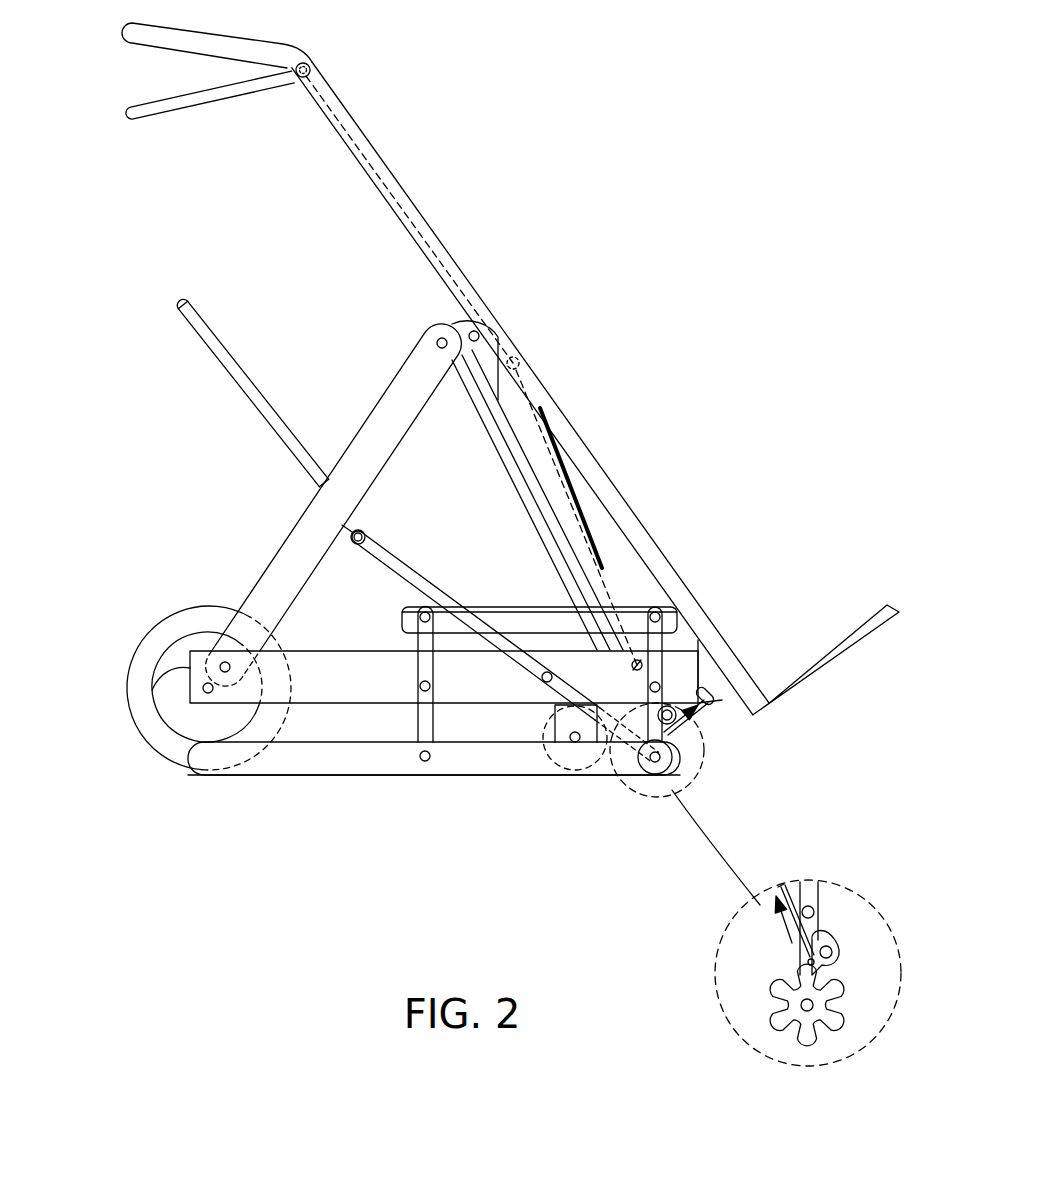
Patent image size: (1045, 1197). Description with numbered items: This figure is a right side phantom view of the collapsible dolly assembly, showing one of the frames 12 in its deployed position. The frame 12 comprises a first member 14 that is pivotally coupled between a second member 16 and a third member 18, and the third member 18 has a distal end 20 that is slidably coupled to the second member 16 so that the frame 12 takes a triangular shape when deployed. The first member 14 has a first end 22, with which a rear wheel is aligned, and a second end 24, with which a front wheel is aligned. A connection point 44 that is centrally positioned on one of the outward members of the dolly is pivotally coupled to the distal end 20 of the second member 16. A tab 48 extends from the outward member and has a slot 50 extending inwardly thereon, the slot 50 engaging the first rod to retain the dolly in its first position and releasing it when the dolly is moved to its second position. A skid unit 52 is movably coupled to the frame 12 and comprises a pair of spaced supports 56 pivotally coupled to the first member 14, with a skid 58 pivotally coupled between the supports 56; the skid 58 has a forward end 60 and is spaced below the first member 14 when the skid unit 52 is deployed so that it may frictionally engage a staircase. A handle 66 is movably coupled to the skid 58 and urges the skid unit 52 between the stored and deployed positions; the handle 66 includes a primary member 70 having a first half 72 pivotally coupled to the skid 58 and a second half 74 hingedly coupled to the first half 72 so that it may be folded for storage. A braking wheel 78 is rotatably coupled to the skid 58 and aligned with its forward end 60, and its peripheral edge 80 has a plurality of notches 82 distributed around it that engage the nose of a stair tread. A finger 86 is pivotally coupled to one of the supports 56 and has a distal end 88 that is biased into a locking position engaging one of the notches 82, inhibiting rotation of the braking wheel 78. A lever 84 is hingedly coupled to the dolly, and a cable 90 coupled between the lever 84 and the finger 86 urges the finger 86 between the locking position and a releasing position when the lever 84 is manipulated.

The frame 12 is at (332, 468).
The first member 14 is at (320, 707).
The second member 16 is at (517, 433).
The third member 18 is at (286, 540).
The distal end 20 is at (433, 323).
The first end 22 is at (157, 668).
The second end 24 is at (650, 660).
The connection point 44 is at (477, 332).
The tab 48 is at (722, 700).
The slot 50 is at (677, 773).
The skid unit 52 is at (510, 808).
The support 56 is at (430, 718).
The skid 58 is at (237, 777).
The forward end 60 is at (677, 790).
The handle 66 is at (224, 288).
The primary member 70 is at (228, 378).
The first half 72 is at (438, 550).
The second half 74 is at (278, 380).
The braking wheel 78 is at (780, 1000).
The peripheral edge 80 is at (837, 963).
The notch 82 is at (800, 1036).
The lever 84 is at (170, 112).
The finger 86 is at (700, 650).
The distal end 88 is at (800, 973).
The cable 90 is at (372, 163).